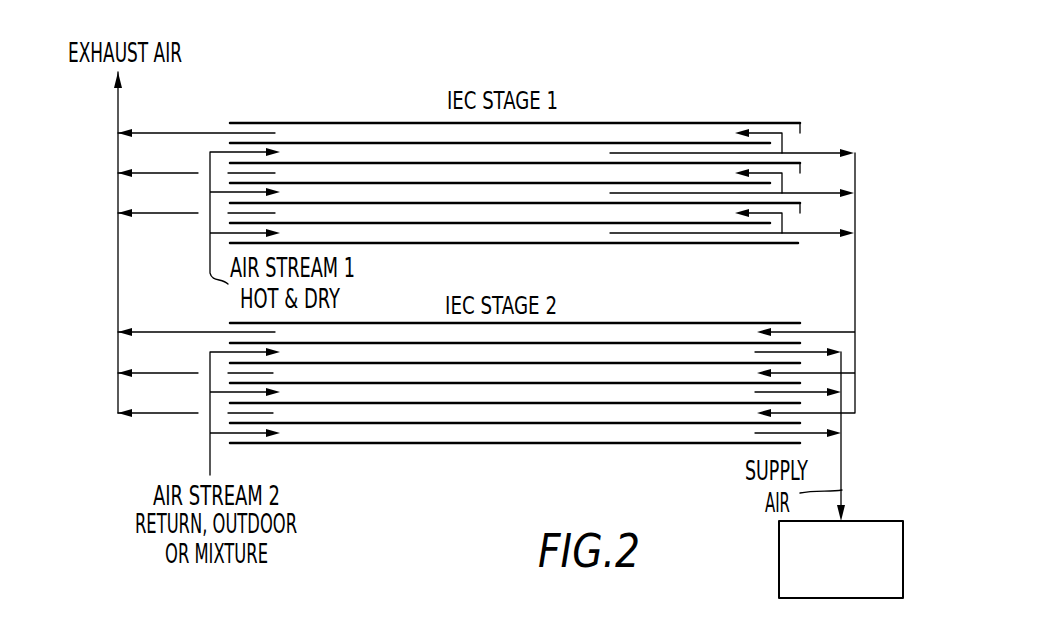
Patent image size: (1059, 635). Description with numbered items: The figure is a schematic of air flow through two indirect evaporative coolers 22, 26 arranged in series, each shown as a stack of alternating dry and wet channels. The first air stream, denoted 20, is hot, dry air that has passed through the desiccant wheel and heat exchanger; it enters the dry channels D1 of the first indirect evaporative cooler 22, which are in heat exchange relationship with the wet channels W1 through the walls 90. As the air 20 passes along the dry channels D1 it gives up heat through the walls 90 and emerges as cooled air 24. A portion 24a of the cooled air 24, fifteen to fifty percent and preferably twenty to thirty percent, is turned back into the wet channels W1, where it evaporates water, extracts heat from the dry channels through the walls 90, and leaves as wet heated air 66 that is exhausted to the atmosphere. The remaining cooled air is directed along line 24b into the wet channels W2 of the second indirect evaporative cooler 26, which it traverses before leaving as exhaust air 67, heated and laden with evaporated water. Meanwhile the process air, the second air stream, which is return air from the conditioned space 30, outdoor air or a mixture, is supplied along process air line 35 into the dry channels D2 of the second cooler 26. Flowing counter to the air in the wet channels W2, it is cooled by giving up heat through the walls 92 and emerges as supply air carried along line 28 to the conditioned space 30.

The air stream 1 20 is at (210, 226).
The indirect evaporative cooler 22 is at (641, 88).
The cooled air 24 is at (822, 192).
The portion of the cooled air 24a is at (790, 167).
The line 24b is at (855, 310).
The indirect evaporative cooler 26 is at (535, 462).
The line 28 is at (843, 463).
The conditioned space 30 is at (779, 573).
The process air line 35 is at (210, 428).
The wet heated air 66 is at (168, 176).
The exhaust air 67 is at (160, 414).
The walls 90 is at (317, 222).
The walls 92 is at (345, 343).
The wet channels W1 is at (423, 133).
The dry channels D1 is at (588, 190).
The wet channels W2 is at (410, 370).
The dry channels D2 is at (635, 390).